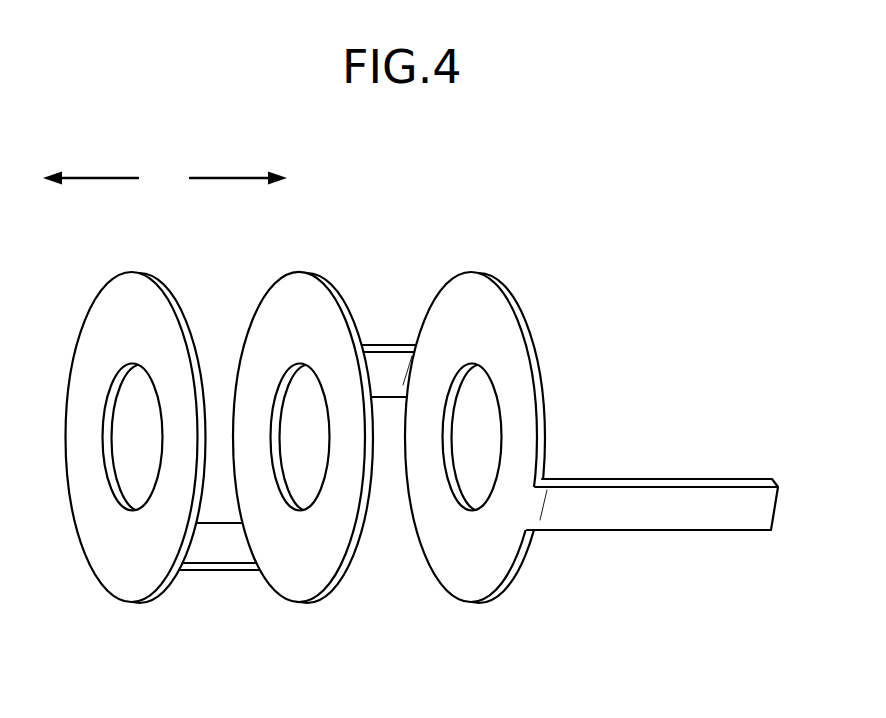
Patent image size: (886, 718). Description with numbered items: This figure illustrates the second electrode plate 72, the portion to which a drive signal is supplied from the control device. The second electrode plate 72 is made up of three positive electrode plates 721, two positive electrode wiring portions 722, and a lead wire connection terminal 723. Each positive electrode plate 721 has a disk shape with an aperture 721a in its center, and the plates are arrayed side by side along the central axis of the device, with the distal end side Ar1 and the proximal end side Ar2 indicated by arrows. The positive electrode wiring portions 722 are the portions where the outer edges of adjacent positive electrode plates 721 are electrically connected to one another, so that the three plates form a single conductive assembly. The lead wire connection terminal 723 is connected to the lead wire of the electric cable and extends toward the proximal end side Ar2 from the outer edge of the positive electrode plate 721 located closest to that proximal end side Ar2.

The second electrode plate 72 is at (490, 172).
The positive electrode plate 721 is at (128, 578).
The aperture 721a is at (118, 476).
The positive electrode wiring portion 722 is at (387, 368).
The lead wire connection terminal 723 is at (672, 505).
The distal end side Ar1 is at (89, 177).
The proximal end side Ar2 is at (232, 177).